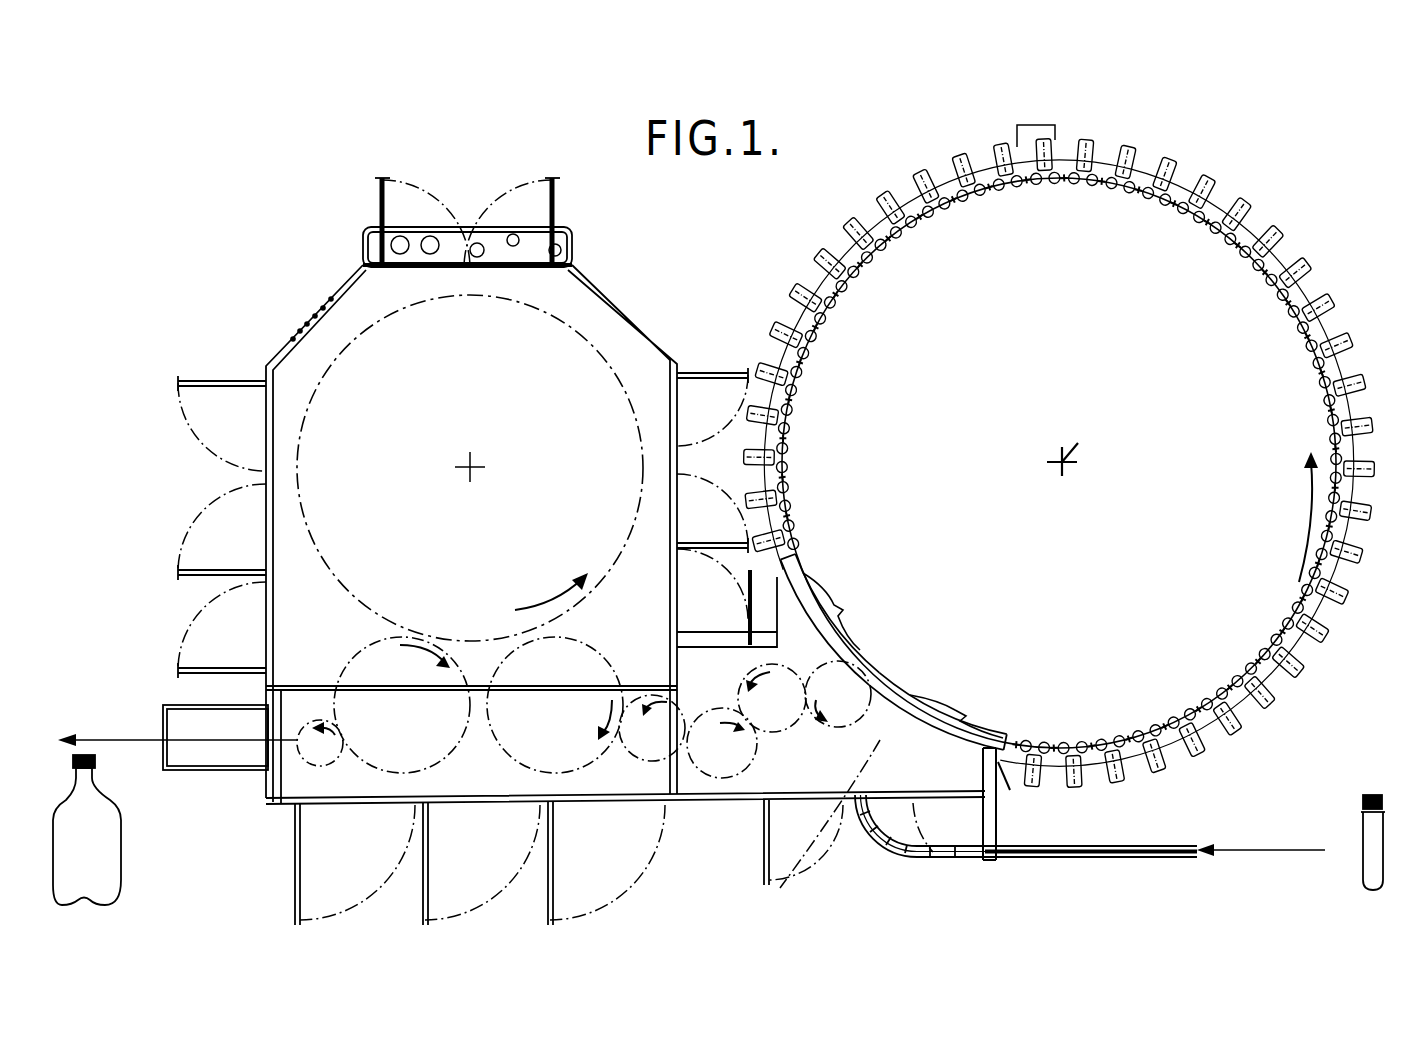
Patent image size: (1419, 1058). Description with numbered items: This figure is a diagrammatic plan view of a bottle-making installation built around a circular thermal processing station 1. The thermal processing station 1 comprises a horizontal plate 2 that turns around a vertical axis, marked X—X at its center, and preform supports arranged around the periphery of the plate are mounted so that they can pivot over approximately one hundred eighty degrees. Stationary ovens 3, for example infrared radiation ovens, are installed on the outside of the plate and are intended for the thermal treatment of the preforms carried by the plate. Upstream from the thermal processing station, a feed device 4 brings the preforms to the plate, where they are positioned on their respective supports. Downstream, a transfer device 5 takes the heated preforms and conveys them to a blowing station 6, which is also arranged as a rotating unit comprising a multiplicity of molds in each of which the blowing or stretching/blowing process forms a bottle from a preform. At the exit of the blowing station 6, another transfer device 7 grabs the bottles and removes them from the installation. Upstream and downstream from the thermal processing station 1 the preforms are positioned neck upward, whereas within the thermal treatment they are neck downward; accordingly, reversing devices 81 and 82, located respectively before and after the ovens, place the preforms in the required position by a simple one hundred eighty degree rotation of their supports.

The thermal processing station 1 is at (1059, 453).
The horizontal plate 2 is at (1059, 456).
The stationary ovens 3 is at (1346, 340).
The feed device 4 is at (917, 862).
The transfer device 5 is at (610, 656).
The blowing station 6 is at (582, 314).
The transfer device 7 is at (315, 712).
The reversing device 81 is at (938, 710).
The reversing device 82 is at (832, 619).